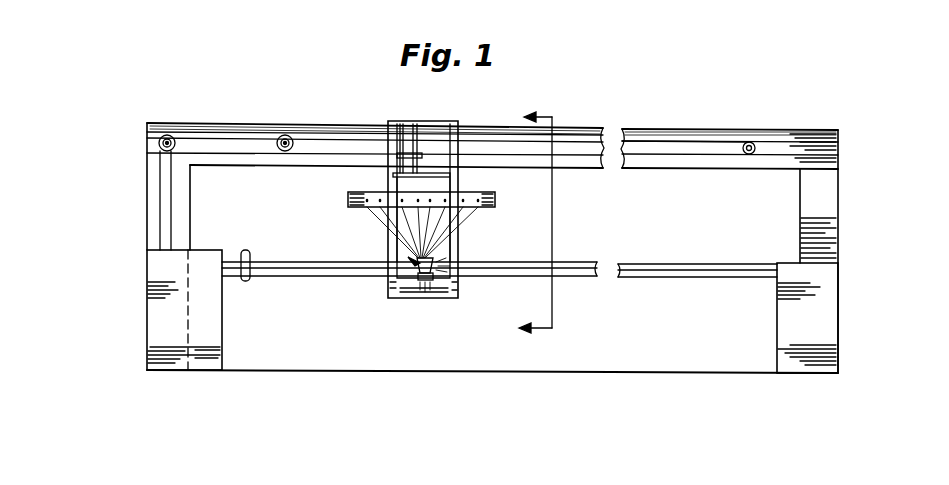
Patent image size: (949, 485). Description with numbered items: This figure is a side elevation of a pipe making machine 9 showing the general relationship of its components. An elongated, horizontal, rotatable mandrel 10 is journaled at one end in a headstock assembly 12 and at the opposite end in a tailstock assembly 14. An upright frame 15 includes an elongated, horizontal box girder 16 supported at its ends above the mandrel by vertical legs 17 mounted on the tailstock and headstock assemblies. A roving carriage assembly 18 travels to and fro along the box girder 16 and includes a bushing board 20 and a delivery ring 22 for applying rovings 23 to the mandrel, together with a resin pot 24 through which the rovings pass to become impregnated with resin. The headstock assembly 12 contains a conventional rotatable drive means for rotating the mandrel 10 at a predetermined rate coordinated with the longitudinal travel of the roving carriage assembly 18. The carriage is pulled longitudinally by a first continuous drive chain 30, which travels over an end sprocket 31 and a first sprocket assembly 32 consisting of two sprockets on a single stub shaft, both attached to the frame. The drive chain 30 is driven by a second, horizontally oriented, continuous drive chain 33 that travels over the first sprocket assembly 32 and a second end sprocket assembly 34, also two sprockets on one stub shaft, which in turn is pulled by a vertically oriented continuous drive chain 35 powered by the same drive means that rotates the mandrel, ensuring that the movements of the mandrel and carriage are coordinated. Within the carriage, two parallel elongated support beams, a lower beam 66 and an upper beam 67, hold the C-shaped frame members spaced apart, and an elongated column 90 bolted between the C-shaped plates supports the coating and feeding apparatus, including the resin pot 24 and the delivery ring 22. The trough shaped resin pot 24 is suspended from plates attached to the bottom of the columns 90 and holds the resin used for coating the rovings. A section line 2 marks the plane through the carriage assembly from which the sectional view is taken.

The pipe making machine 9 is at (849, 297).
The mandrel 10 is at (567, 263).
The headstock assembly 12 is at (219, 296).
The tailstock assembly 14 is at (778, 300).
The upright frame 15 is at (207, 129).
The box girder 16 is at (582, 128).
The vertical legs 17 is at (147, 163).
The roving carriage assembly 18 is at (456, 123).
The bushing board 20 is at (496, 200).
The delivery ring 22 is at (440, 266).
The rovings 23 is at (458, 222).
The resin pot 24 is at (452, 298).
The first continuous drive chain 30 is at (725, 140).
The end sprocket 31 is at (755, 142).
The first sprocket assembly 32 is at (295, 137).
The second continuous drive chain 33 is at (245, 131).
The second end sprocket assembly 34 is at (170, 135).
The vertically oriented continuous drive chain 35 is at (160, 201).
The lower beam 66 is at (410, 180).
The upper beam 67 is at (440, 107).
The column 90 is at (456, 188).
The section line 2- 2 is at (532, 223).